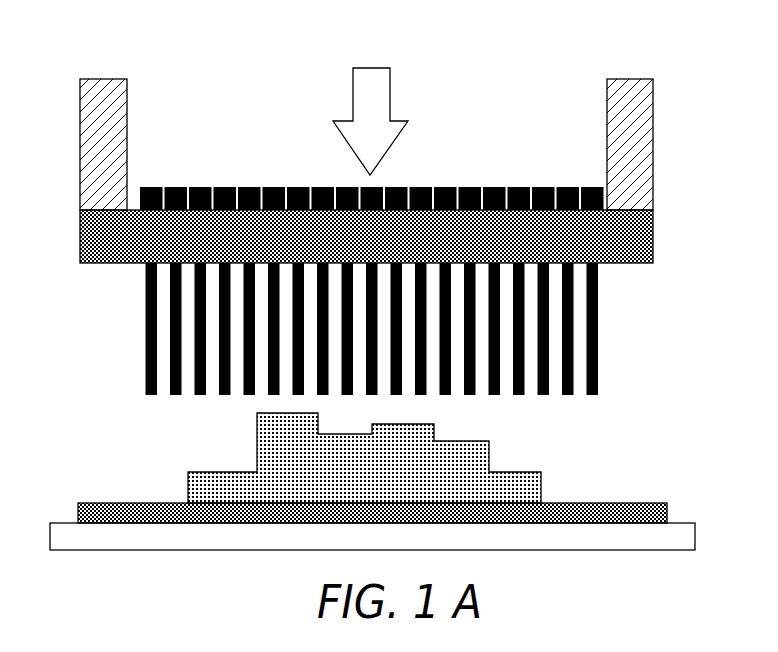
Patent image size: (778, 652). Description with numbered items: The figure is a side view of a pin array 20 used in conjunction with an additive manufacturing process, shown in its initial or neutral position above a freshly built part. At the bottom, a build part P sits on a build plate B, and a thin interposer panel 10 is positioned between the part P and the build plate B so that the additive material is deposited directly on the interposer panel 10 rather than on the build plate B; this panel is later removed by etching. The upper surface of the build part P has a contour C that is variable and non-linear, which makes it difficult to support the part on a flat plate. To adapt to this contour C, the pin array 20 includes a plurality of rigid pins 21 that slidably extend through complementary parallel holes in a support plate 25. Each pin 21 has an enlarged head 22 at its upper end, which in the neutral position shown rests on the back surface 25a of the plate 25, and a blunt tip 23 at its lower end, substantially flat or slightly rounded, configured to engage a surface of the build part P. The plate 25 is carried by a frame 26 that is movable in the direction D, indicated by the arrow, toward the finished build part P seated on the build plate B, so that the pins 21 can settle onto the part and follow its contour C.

The pin array 20 is at (385, 254).
The rigid pins 21 is at (598, 338).
The enlarged head 22 is at (203, 187).
The tip 23 is at (598, 396).
The support plate 25 is at (80, 238).
The back surface 25a is at (632, 208).
The frame 26 is at (92, 122).
The interposer panel 10 is at (600, 503).
The build plate B is at (695, 522).
The contour C is at (257, 443).
The build part P is at (375, 458).
The direction D is at (370, 107).